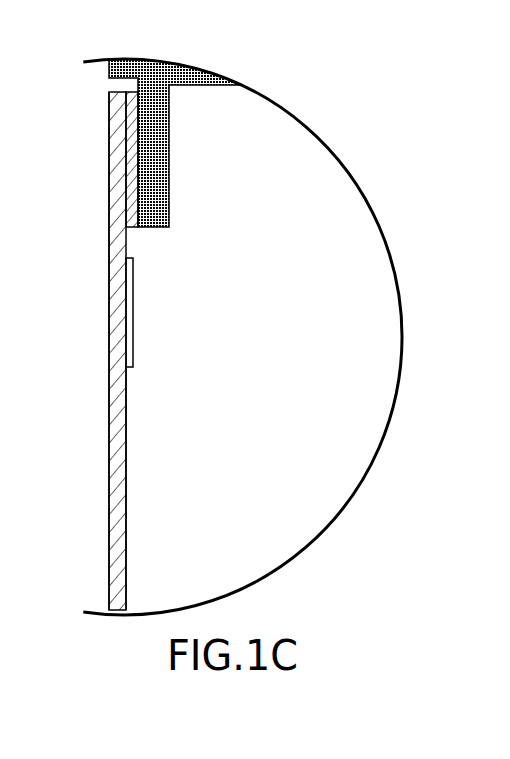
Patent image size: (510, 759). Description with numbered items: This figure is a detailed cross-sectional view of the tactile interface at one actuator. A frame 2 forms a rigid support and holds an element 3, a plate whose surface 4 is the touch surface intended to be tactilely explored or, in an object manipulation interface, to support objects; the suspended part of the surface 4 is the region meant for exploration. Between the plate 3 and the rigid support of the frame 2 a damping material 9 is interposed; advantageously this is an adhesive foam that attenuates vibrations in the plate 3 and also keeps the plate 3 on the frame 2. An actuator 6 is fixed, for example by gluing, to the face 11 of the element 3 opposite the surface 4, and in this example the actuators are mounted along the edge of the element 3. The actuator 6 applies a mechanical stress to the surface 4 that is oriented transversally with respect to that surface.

The frame 2 is at (197, 65).
The element 3 is at (120, 440).
The surface 4 is at (110, 156).
The actuator 6 is at (128, 289).
The damping material 9 is at (131, 128).
The face 11 is at (125, 395).